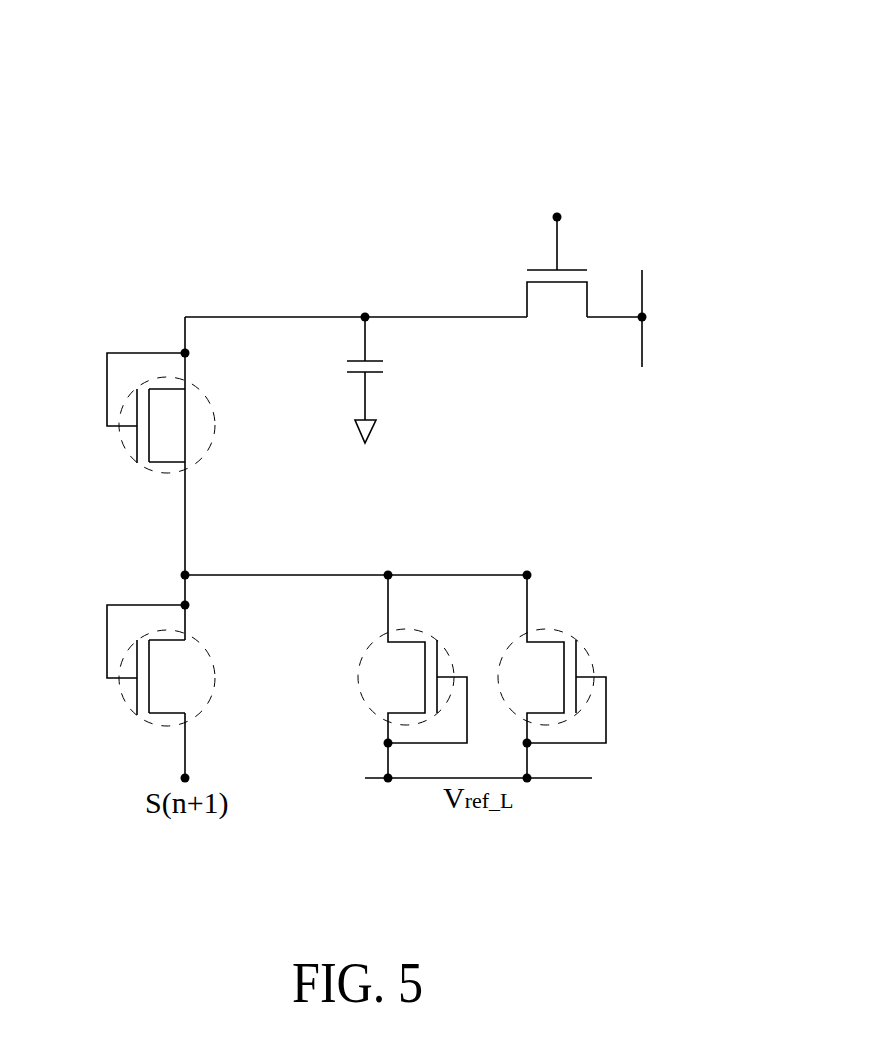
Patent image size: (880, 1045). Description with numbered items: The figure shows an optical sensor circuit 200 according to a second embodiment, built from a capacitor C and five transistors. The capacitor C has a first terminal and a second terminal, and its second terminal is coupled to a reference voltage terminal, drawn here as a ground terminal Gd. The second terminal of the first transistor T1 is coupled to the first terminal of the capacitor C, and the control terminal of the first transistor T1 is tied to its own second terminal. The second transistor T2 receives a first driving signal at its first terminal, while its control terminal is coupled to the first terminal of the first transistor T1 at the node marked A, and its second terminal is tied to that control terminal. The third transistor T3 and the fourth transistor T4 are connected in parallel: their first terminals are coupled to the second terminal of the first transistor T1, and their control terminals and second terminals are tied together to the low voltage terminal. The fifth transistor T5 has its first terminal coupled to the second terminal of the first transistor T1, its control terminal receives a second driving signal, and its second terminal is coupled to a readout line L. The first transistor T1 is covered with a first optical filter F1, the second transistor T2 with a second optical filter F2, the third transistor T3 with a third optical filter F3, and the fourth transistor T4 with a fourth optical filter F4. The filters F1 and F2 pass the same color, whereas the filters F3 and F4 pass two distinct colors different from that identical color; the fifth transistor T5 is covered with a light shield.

The optical sensor circuit 200 is at (677, 98).
The first transistor T1 is at (154, 406).
The second transistor T2 is at (153, 658).
The third transistor T3 is at (421, 677).
The fourth transistor T4 is at (559, 677).
The fifth transistor T5 is at (557, 265).
The capacitor C is at (385, 368).
The first optical filter F1 is at (159, 473).
The second optical filter F2 is at (125, 702).
The third optical filter F3 is at (366, 657).
The fourth optical filter F4 is at (588, 657).
The node A is at (172, 572).
The ground terminal Gd is at (387, 436).
The readout line L is at (642, 334).